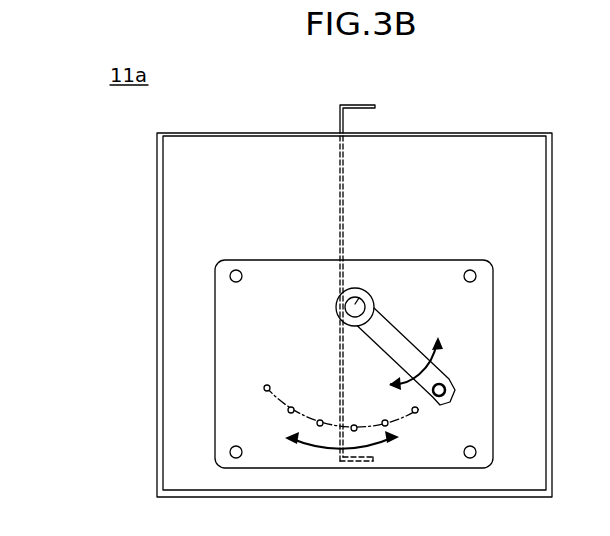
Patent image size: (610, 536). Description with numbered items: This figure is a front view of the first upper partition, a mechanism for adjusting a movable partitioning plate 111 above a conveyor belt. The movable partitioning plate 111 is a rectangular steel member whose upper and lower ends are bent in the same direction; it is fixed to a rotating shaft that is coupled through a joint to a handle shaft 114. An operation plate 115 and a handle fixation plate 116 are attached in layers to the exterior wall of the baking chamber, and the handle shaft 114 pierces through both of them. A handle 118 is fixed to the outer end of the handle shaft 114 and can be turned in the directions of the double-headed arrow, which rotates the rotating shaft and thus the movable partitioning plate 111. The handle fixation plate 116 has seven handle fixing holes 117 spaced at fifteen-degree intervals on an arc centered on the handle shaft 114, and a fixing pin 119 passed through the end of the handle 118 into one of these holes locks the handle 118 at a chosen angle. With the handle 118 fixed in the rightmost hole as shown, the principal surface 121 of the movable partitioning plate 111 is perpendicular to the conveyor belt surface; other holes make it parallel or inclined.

The movable partitioning plate 111 is at (362, 100).
The handle shaft 114 is at (373, 298).
The operation plate 115 is at (157, 182).
The handle fixation plate 116 is at (422, 259).
The handle fixing holes 117 is at (266, 386).
The handle 118 is at (397, 327).
The fixing pin 119 is at (444, 397).
The principal surface 121 is at (338, 183).